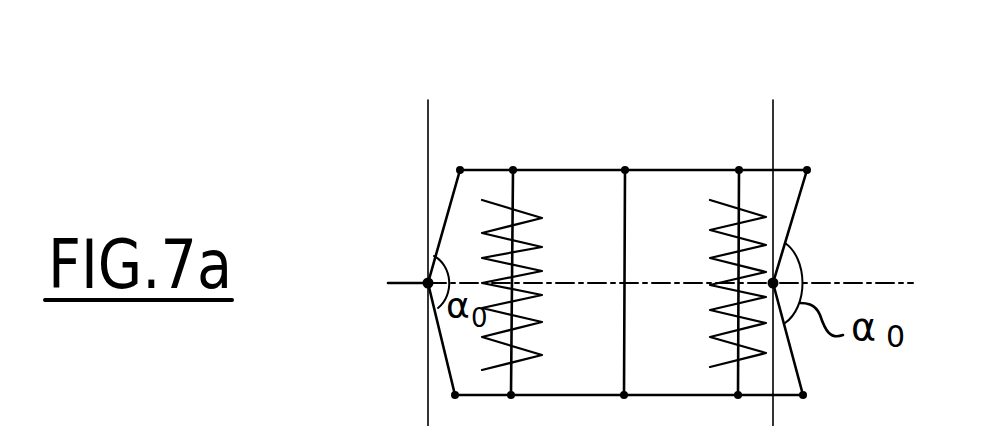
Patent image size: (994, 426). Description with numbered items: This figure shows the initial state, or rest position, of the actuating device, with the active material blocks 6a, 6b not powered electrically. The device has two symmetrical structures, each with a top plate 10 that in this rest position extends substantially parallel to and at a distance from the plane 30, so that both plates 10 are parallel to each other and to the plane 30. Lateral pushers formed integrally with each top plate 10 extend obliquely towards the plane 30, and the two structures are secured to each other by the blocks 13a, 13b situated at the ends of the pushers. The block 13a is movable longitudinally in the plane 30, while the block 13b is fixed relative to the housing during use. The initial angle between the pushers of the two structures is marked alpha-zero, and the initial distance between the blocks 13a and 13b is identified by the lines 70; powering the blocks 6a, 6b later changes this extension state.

The lines 70 is at (428, 118).
The top plate 10 is at (587, 170).
The block of active material 6a is at (488, 232).
The block of active material 6b is at (761, 219).
The block 13a is at (428, 283).
The block 13b is at (800, 258).
The plane 30 is at (395, 285).